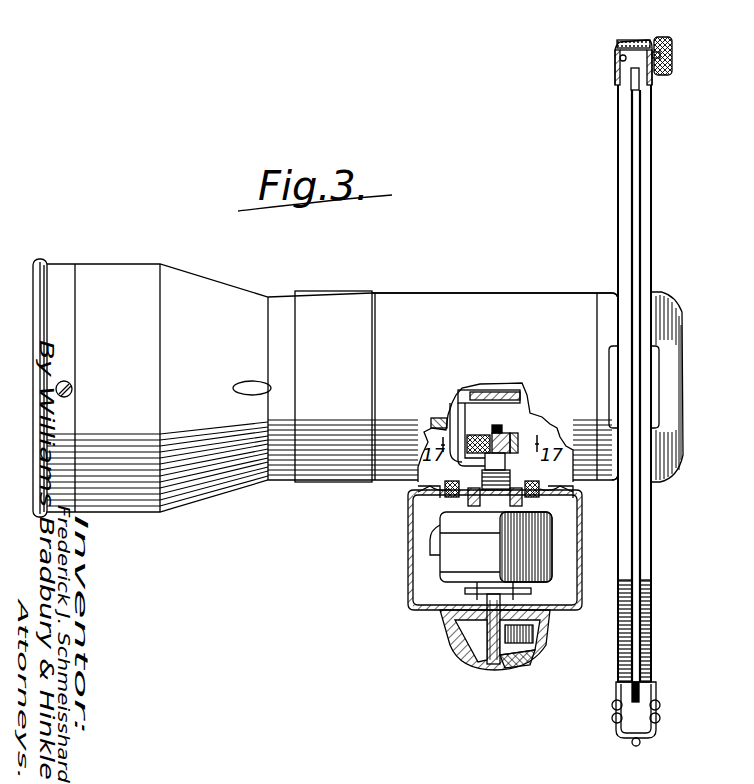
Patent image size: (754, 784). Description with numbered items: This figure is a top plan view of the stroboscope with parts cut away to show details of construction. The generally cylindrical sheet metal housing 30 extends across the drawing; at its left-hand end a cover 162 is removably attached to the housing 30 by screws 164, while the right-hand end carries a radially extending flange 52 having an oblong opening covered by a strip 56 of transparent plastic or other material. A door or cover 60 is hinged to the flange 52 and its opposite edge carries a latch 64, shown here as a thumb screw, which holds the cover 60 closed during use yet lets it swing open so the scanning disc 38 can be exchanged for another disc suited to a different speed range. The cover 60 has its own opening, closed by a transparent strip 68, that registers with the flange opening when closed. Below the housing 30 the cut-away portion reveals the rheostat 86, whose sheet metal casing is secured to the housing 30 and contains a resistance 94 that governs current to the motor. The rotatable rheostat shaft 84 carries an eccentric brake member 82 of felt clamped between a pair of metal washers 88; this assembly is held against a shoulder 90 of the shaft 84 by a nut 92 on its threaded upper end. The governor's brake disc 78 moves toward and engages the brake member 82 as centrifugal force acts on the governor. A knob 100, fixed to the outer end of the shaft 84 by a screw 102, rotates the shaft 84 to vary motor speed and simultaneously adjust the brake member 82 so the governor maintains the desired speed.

The housing 30 is at (462, 281).
The scanning disc 38 is at (633, 75).
The flange 52 is at (620, 612).
The strip of transparent material 56 is at (597, 388).
The cover 60 is at (686, 427).
The latch 64 is at (672, 72).
The strip of transparent material 68 is at (660, 388).
The brake disc 78 is at (468, 408).
The eccentric brake member 82 is at (480, 435).
The rheostat shaft 84 is at (499, 428).
The rheostat 86 is at (398, 540).
The metal washers 88 is at (460, 428).
The shoulder 90 is at (500, 462).
The nut 92 is at (513, 433).
The resistance 94 is at (535, 541).
The knob 100 is at (472, 672).
The screw 102 is at (515, 670).
The cover 162 is at (45, 262).
The screws 164 is at (72, 389).